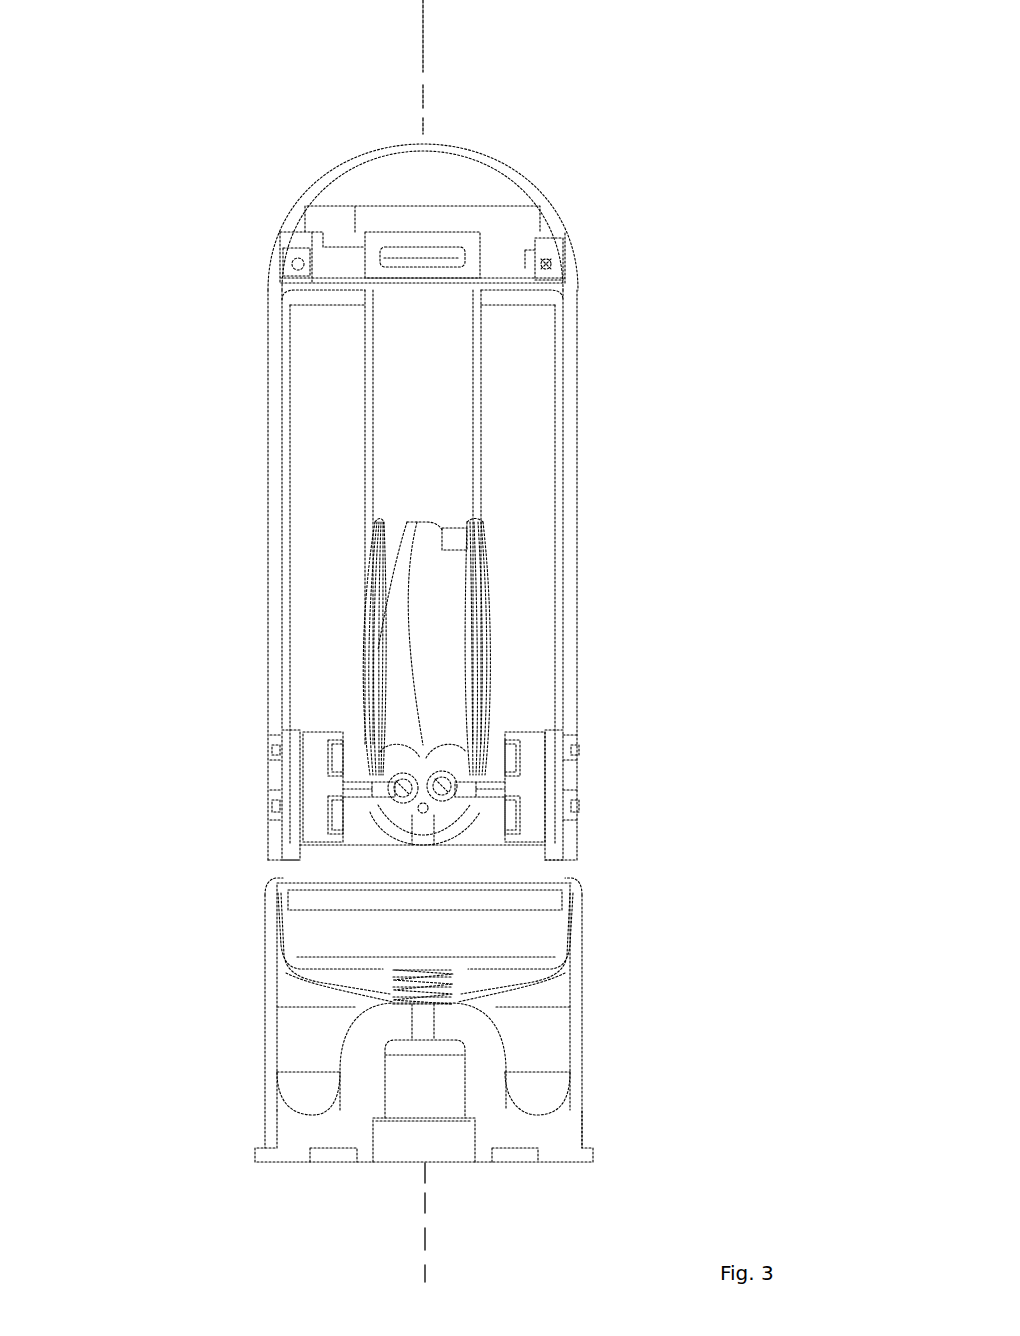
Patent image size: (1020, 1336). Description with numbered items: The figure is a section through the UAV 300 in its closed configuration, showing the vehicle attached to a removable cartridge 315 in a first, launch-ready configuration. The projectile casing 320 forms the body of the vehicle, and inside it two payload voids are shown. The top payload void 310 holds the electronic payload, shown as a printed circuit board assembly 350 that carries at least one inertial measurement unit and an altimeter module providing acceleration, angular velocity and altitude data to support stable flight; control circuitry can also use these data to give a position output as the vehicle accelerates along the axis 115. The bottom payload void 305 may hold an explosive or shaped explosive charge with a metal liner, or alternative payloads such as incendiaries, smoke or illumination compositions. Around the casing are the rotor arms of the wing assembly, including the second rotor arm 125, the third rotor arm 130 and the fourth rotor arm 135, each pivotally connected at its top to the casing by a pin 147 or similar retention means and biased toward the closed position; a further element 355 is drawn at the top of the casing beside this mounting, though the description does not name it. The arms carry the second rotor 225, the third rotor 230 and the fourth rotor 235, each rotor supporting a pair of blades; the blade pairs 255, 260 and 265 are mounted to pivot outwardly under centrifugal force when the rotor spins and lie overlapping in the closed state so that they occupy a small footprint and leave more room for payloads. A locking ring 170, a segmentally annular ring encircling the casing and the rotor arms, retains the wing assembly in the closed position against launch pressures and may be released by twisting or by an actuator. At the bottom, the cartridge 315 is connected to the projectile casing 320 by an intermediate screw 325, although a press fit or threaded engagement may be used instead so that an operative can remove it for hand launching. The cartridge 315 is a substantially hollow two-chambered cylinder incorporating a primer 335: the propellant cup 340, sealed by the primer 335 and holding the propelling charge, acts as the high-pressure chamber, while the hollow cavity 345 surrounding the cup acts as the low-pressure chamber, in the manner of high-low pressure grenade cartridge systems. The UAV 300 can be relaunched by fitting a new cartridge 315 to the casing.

The axis 115 is at (437, 46).
The UAV 300 is at (570, 50).
The printed circuit board assembly 350 is at (333, 208).
The top payload void 310 is at (487, 189).
The third rotor arm 130 is at (408, 326).
The fastener block 355 is at (503, 251).
The pin 147 is at (548, 265).
The fourth rotor arm 135 is at (577, 362).
The second rotor arm 125 is at (268, 393).
The blade pair 260 is at (430, 525).
The blade pair 255 is at (384, 640).
The blade pair 265 is at (478, 653).
The second rotor 225 is at (310, 790).
The third rotor 230 is at (533, 787).
The fourth rotor 235 is at (441, 818).
The locking ring 170 is at (285, 880).
The bottom payload void 305 is at (517, 927).
The projectile casing 320 is at (553, 957).
The hollow cavity 345 is at (293, 1025).
The intermediate screw 325 is at (470, 982).
The propellant cup 340 is at (415, 1093).
The removable cartridge 315 is at (540, 1138).
The primer 335 is at (465, 1165).